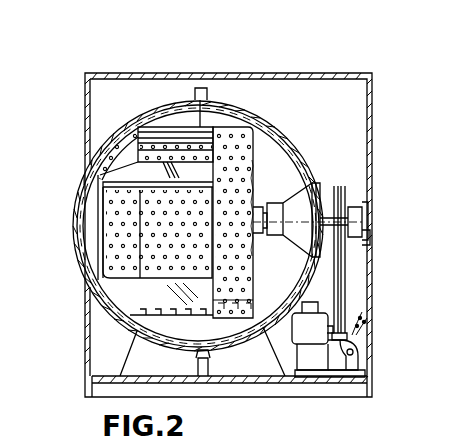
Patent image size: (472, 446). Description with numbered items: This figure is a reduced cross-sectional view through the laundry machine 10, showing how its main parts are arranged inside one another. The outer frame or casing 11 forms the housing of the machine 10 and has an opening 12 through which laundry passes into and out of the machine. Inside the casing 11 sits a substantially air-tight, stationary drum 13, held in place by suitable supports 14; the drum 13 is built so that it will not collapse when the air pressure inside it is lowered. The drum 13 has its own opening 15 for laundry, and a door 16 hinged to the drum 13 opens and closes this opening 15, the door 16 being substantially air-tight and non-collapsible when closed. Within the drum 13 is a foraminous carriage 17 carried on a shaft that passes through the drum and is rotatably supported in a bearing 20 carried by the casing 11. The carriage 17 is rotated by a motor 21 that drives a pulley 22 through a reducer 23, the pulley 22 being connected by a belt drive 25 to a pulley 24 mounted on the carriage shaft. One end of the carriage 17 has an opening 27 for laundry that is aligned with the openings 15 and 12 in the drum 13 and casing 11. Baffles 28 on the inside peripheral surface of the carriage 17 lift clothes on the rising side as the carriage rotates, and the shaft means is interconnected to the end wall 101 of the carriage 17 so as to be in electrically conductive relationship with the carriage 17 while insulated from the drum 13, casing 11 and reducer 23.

The laundry machine 10 is at (370, 56).
The outer frame or casing 11 is at (372, 112).
The opening 12 is at (90, 166).
The stationary drum 13 is at (261, 110).
The supports 14 is at (230, 364).
The opening 15 is at (74, 218).
The door 16 is at (80, 235).
The foraminous carriage 17 is at (170, 127).
The bearing 20 is at (360, 221).
The motor 21 is at (362, 349).
The pulley 22 is at (350, 325).
The reducer 23 is at (318, 336).
The pulley 24 is at (354, 166).
The belt drive 25 is at (346, 279).
The opening 27 is at (103, 187).
The baffles 28 is at (157, 128).
The end wall 101 is at (255, 150).